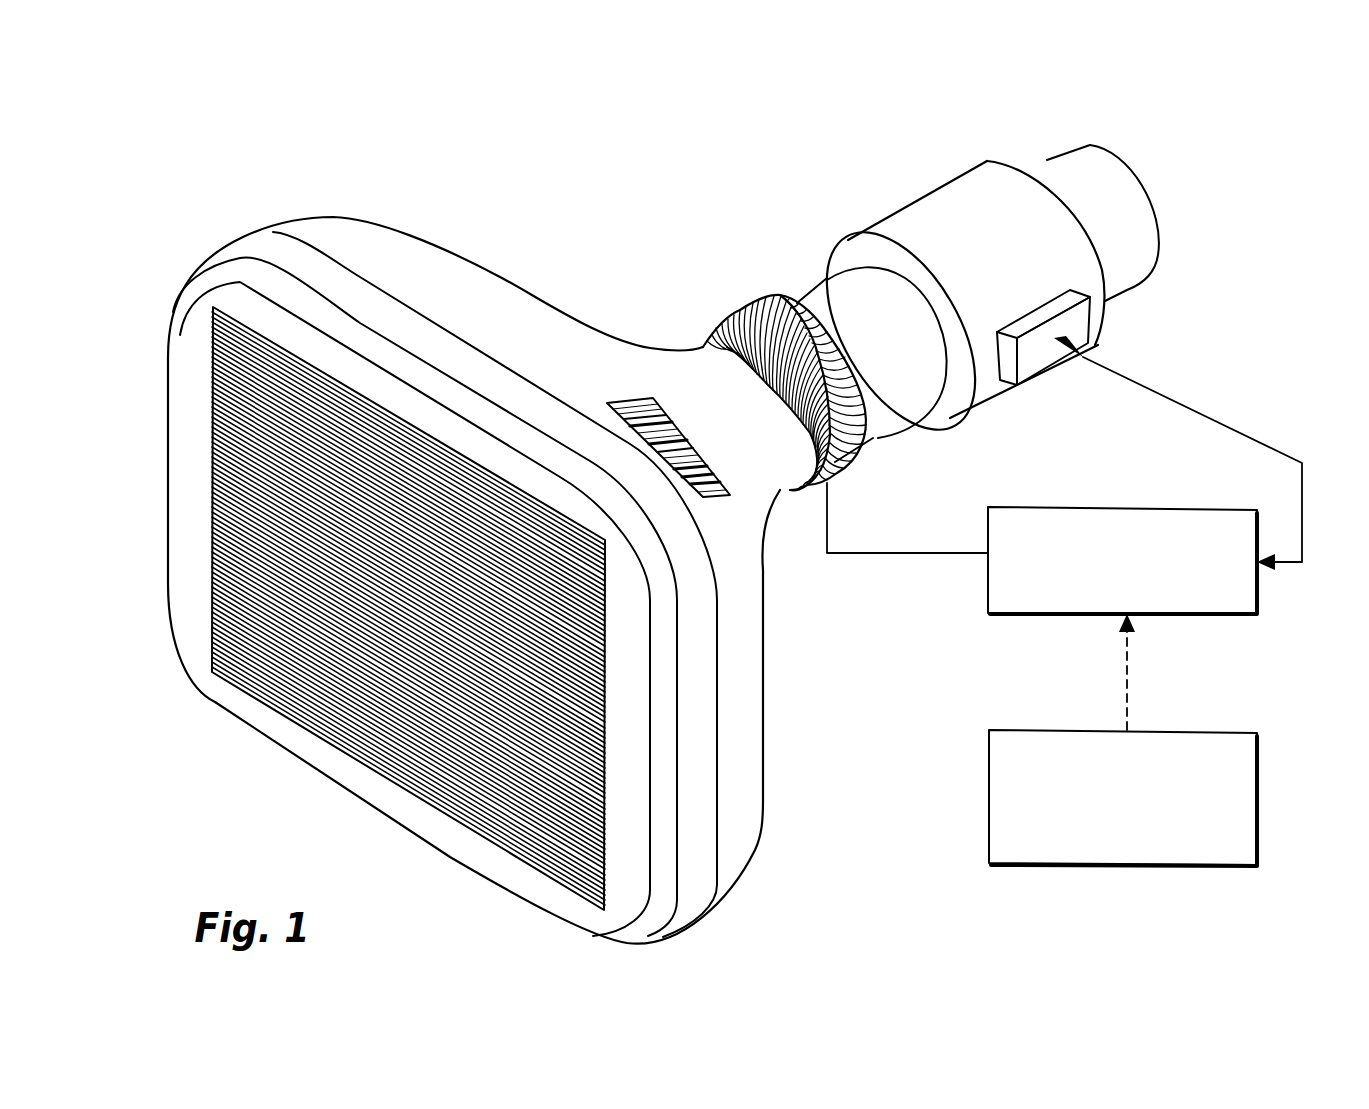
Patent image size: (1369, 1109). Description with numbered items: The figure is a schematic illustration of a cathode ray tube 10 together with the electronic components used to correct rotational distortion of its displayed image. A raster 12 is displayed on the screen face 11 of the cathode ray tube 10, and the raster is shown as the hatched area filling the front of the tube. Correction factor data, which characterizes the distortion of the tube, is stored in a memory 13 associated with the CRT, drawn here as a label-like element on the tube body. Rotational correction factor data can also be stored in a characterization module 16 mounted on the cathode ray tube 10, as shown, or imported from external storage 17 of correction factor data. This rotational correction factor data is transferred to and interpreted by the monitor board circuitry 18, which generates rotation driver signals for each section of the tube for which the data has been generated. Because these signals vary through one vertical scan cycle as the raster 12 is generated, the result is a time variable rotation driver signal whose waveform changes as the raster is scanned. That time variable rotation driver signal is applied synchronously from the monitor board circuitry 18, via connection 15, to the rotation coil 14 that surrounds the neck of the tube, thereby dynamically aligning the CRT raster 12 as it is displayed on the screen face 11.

The cathode ray tube 10 is at (433, 258).
The screen face 11 is at (227, 697).
The raster 12 is at (292, 400).
The memory 13 is at (628, 398).
The rotation coil 14 is at (778, 300).
The connection 15 is at (945, 555).
The characterization module 16 is at (1093, 340).
The external storage 17 is at (1087, 867).
The monitor board circuitry 18 is at (1163, 614).